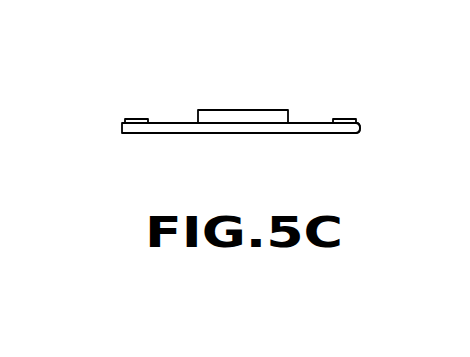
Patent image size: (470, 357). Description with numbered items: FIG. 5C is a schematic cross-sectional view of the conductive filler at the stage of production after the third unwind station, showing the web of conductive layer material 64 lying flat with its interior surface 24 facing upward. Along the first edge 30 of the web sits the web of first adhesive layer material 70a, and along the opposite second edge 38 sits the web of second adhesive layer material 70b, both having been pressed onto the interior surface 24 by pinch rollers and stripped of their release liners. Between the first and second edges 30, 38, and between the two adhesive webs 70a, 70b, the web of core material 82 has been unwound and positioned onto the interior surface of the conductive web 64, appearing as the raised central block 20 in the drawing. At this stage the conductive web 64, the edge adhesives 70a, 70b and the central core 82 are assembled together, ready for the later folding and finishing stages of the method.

The semiconductor die / chip 20 is at (248, 110).
The interior surface 24 is at (178, 122).
The first edge 30 is at (138, 134).
The second edge 38 is at (356, 132).
The web of conductive layer material 64 is at (197, 133).
The web of adhesive layer material 70a is at (147, 118).
The web of adhesive layer material 70b is at (354, 118).
The web of core material 82 is at (275, 110).